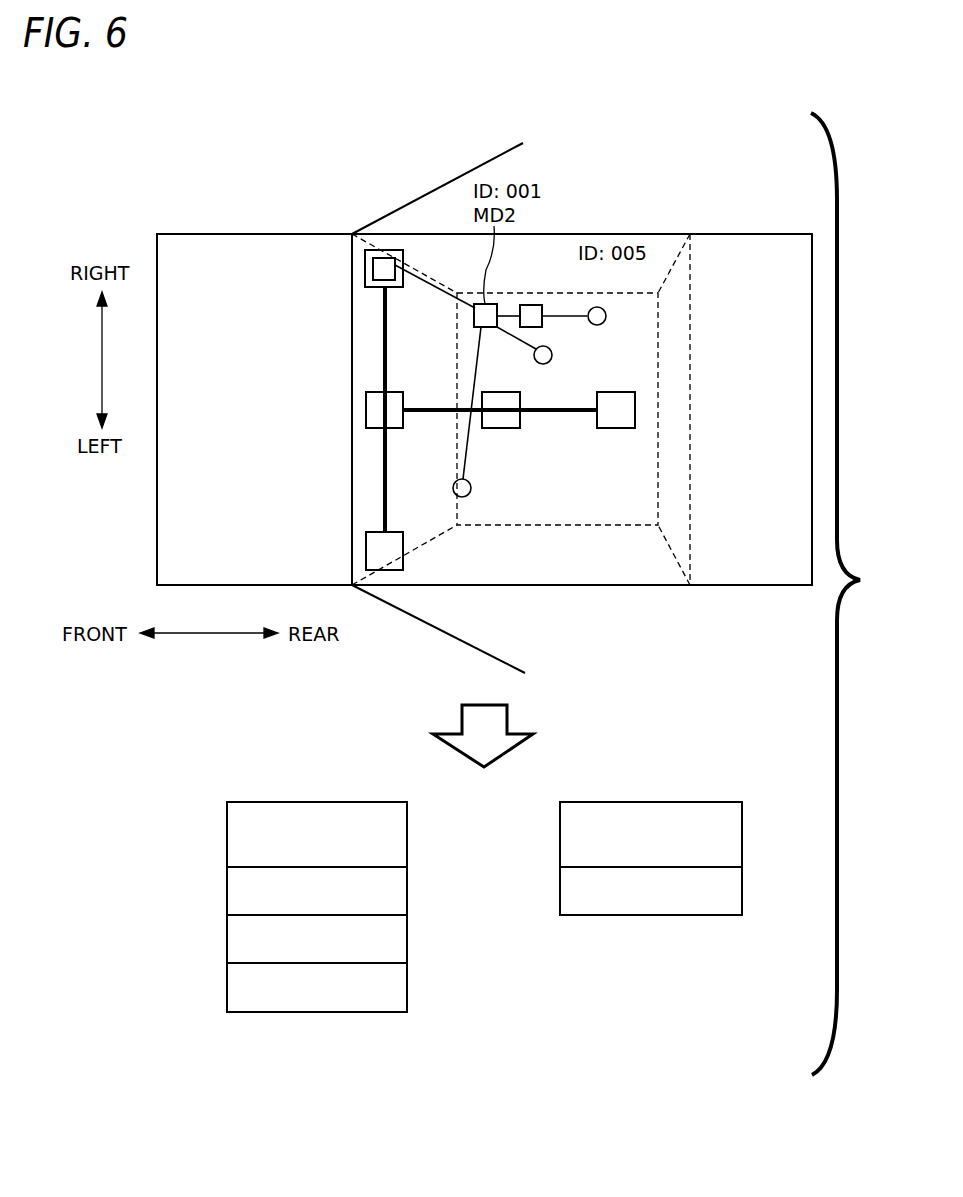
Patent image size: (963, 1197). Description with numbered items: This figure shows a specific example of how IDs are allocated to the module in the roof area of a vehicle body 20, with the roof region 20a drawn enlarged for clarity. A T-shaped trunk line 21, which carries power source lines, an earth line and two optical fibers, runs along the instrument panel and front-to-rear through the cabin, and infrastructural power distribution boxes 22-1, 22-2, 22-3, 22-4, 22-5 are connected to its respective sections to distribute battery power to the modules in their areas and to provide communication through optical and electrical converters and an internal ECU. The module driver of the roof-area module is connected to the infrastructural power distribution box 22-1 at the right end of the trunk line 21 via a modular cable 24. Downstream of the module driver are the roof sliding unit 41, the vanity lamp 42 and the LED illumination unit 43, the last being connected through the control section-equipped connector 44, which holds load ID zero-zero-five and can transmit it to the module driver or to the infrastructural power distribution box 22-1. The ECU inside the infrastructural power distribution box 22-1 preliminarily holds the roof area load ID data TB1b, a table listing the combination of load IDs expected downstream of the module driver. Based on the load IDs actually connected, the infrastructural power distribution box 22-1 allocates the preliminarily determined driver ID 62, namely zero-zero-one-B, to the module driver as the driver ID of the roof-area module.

The vehicle body 20 is at (672, 234).
The enlarged region of vehicle 20a is at (467, 173).
The trunk line 21 is at (412, 415).
The infrastructural power distribution box 22-1 is at (365, 270).
The infrastructural power distribution box 22-2 is at (366, 412).
The infrastructural power distribution box 22-3 is at (366, 552).
The infrastructural power distribution box 22-4 is at (501, 428).
The infrastructural power distribution box 22-5 is at (616, 428).
The modular cable 24 is at (421, 287).
The roof sliding unit 41 is at (552, 358).
The vanity lamp 42 is at (469, 496).
The LED illumination unit 43 is at (596, 307).
The control section-equipped connector 44 is at (532, 305).
The roof area load ID data TB1b is at (278, 800).
The driver ID 62 is at (685, 802).